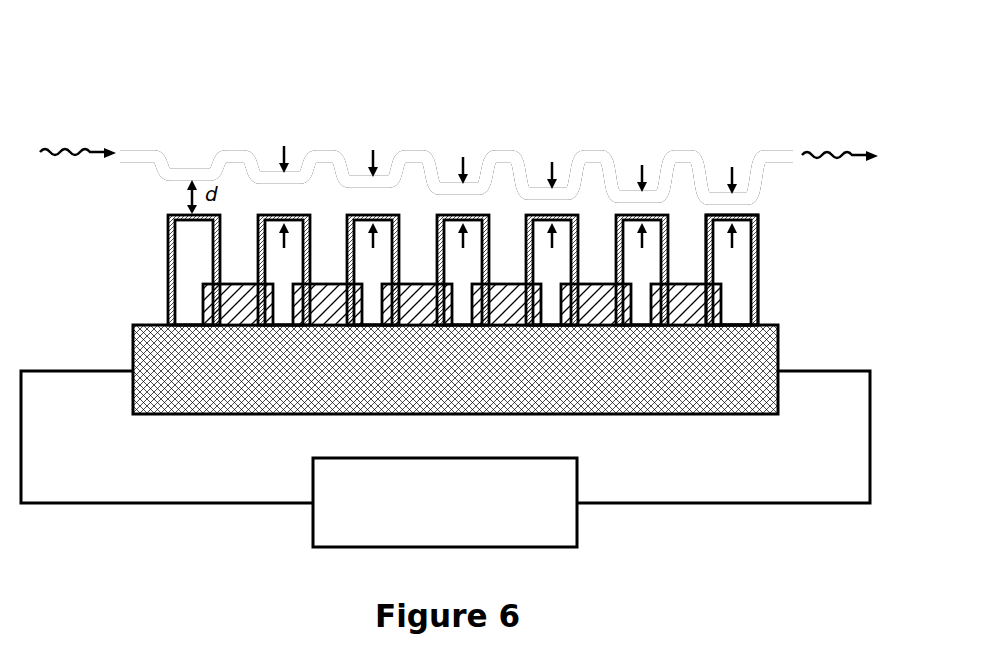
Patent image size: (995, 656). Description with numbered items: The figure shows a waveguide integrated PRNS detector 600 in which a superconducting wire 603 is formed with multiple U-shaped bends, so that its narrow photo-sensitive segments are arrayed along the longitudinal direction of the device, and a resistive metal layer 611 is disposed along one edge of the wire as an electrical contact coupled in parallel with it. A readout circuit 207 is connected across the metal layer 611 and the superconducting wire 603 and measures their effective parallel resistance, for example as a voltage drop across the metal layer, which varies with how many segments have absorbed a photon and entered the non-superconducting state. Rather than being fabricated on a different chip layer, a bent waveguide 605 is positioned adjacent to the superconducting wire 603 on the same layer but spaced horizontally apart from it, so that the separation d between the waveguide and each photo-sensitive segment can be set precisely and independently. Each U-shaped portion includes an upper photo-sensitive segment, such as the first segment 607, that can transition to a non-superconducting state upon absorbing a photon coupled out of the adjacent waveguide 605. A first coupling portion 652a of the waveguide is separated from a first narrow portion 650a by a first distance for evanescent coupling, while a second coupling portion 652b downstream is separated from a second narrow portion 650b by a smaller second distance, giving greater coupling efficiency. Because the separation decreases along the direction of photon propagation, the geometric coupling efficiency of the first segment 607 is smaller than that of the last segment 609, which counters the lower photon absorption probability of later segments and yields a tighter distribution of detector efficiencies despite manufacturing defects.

The waveguide integrated PRNS detector 600 is at (134, 41).
The bent waveguide 605 is at (422, 152).
The upper photo-sensitive segment 607 is at (181, 215).
The last segment 609 is at (760, 263).
The superconducting wire 603 is at (168, 290).
The resistive metal layer 611 is at (630, 398).
The readout circuit 207 is at (465, 513).
The first narrow portion 650a is at (302, 172).
The second narrow portion 650b is at (562, 215).
The first coupling portion 652a is at (284, 215).
The second coupling portion 652b is at (570, 188).